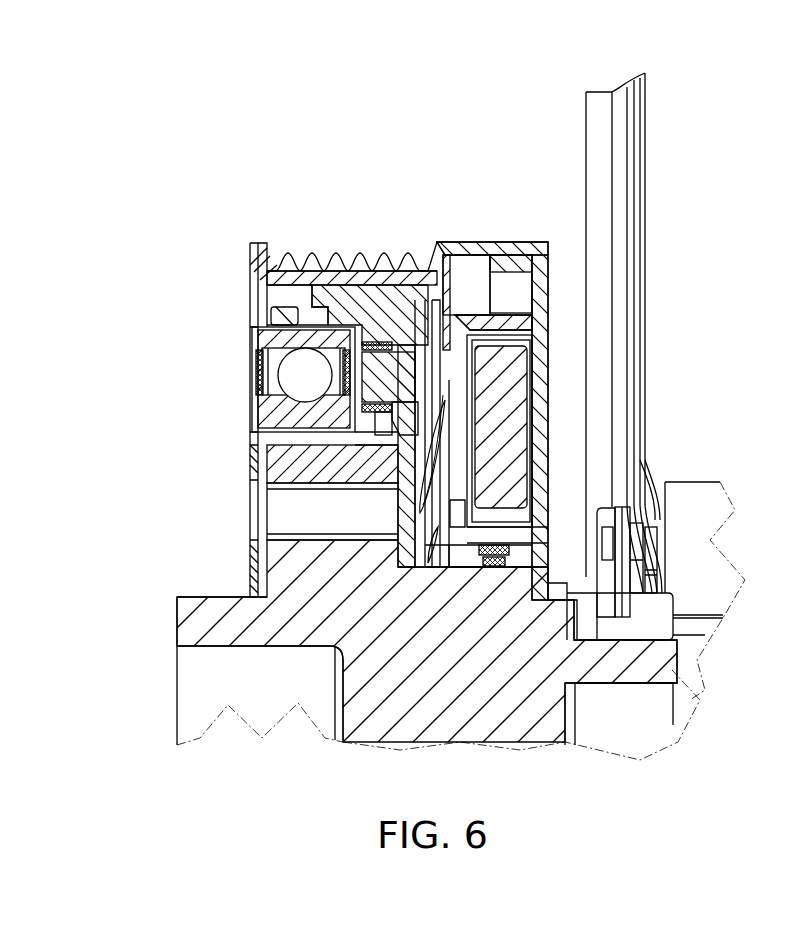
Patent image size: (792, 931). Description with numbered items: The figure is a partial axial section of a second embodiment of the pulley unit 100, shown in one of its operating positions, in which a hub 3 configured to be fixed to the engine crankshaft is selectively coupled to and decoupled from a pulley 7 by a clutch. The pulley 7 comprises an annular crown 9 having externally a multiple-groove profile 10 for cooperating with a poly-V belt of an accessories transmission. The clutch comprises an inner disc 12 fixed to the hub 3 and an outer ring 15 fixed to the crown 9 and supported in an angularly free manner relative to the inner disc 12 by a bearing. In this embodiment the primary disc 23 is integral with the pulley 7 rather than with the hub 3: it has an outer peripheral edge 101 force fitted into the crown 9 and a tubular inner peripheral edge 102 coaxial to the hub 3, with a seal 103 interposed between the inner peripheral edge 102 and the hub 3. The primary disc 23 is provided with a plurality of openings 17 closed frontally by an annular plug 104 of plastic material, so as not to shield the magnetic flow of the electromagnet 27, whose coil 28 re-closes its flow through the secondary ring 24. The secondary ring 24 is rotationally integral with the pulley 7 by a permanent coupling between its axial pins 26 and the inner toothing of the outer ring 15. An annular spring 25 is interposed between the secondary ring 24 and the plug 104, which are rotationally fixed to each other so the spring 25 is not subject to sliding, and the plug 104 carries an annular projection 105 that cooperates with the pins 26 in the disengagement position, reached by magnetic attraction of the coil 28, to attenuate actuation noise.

The pulley unit 100 is at (238, 150).
The multiple-groove profile 10 is at (305, 257).
The outer ring 15 is at (345, 297).
The annular crown 9 is at (383, 270).
The pulley 7 is at (418, 237).
The annular projection 105 is at (443, 355).
The outer peripheral edge 101 is at (530, 268).
The primary disc 23 is at (563, 302).
The electromagnet 27 is at (566, 350).
The coil 28 is at (522, 382).
The annular plug 104 is at (462, 408).
The openings 17 is at (460, 486).
The axial pins 26 is at (355, 380).
The inner disc 12 is at (262, 440).
The annular spring 25 is at (420, 430).
The secondary disc 24 is at (405, 520).
The hub 3 is at (382, 705).
The tubular inner peripheral edge 102 is at (472, 538).
The seal 103 is at (485, 555).